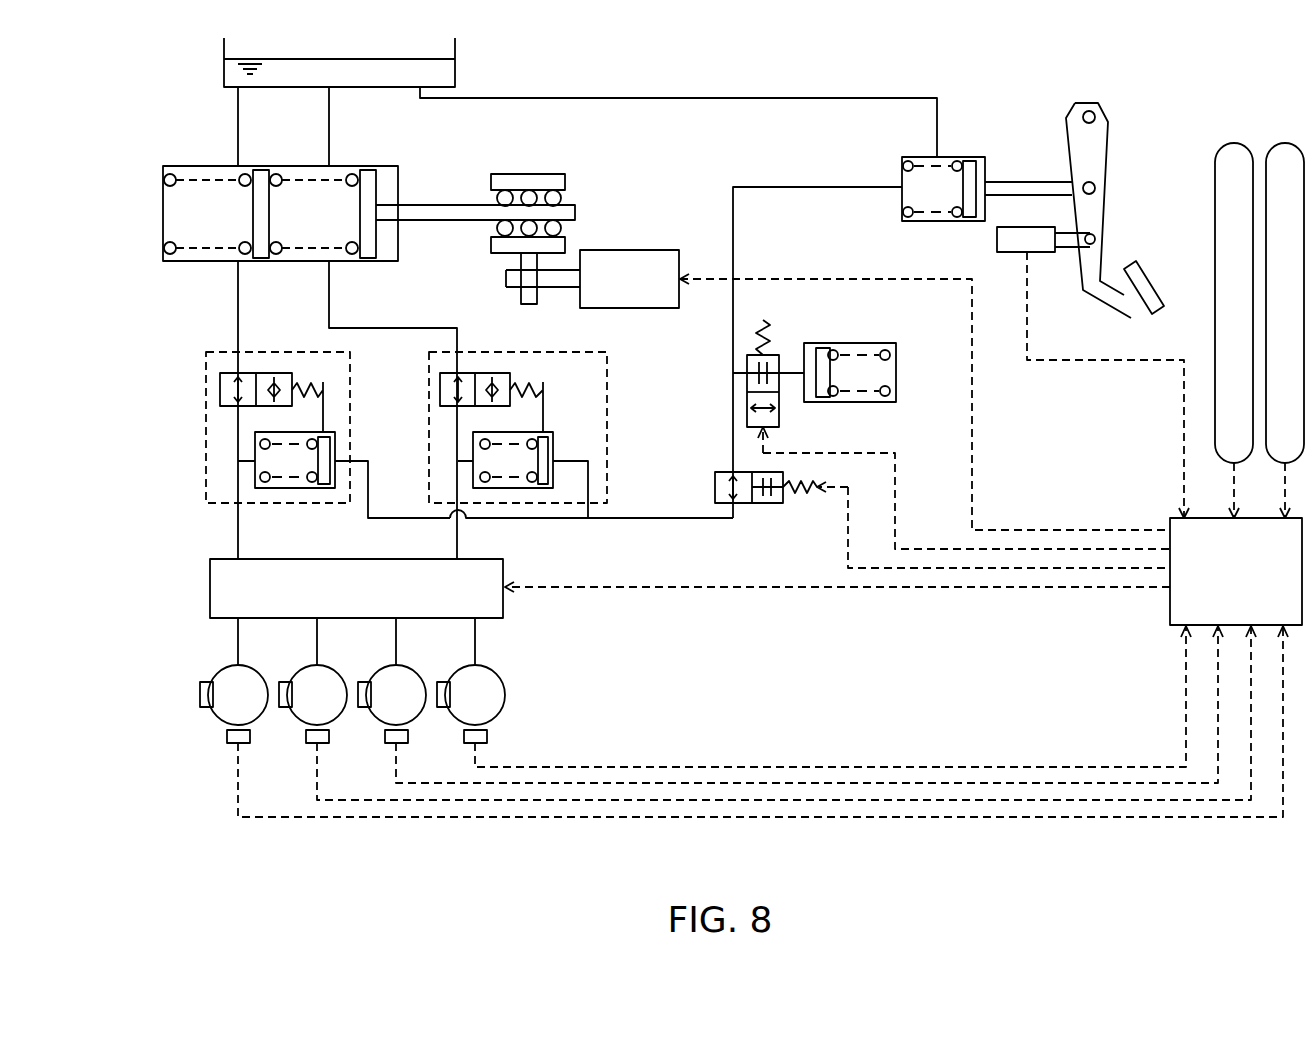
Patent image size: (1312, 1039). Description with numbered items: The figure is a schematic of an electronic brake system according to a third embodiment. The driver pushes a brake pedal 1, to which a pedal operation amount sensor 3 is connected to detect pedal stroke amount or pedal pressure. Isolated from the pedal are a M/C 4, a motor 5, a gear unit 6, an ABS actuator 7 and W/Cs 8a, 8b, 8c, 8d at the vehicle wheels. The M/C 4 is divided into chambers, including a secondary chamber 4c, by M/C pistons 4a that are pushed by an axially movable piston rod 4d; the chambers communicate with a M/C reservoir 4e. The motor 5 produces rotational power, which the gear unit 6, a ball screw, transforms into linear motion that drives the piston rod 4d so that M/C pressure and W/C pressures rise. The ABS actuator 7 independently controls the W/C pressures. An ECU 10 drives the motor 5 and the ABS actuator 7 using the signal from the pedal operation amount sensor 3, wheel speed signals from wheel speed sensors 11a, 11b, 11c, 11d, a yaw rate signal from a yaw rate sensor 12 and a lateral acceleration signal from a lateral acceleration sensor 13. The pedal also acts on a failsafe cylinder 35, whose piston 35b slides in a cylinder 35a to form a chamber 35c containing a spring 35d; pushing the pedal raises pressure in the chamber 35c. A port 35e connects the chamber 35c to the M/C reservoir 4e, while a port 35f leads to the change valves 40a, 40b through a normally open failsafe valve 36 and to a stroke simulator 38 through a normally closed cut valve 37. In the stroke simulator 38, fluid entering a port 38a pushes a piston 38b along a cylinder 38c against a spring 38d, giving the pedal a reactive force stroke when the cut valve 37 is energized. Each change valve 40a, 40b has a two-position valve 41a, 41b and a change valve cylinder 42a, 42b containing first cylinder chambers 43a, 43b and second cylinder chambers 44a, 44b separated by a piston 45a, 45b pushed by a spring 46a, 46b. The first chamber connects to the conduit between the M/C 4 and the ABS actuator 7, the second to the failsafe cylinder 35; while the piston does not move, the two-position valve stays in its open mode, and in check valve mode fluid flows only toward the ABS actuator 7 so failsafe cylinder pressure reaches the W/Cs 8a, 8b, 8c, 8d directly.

The brake pedal 1 is at (1145, 281).
The pedal operation amount sensor 3 is at (1022, 252).
The M/C 4 is at (362, 326).
The M/C pistons 4a is at (262, 168).
The secondary chamber 4c is at (318, 228).
The piston rod 4d is at (203, 228).
The M/C reservoir 4e is at (368, 58).
The motor 5 is at (650, 250).
The gear unit 6 is at (566, 178).
The ABS actuator 7 is at (503, 612).
The W/C 8a is at (205, 682).
The W/C 8b is at (285, 682).
The W/C 8c is at (364, 682).
The W/C 8d is at (443, 682).
The ECU 10 is at (1170, 612).
The wheel speed sensor 11a is at (227, 738).
The wheel speed sensor 11b is at (306, 738).
The wheel speed sensor 11c is at (385, 738).
The wheel speed sensor 11d is at (464, 738).
The yaw rate sensor 12 is at (1234, 143).
The lateral acceleration sensor 13 is at (1285, 143).
The failsafe cylinder 35 is at (902, 281).
The cylinder 35a is at (918, 157).
The piston 35b is at (968, 160).
The chamber 35c is at (935, 200).
The spring 35d is at (902, 166).
The port 35e is at (940, 157).
The port 35f is at (902, 204).
The failsafe valve 36 is at (715, 487).
The cut valve 37 is at (776, 354).
The stroke simulator 38 is at (843, 370).
The port 38a is at (803, 375).
The piston 38b is at (833, 350).
The cylinder 38c is at (869, 343).
The spring 38d is at (886, 396).
The change valve 40a is at (547, 448).
The change valve 40b is at (289, 448).
The two-position valve 41a is at (440, 388).
The two-position valve 41b is at (220, 392).
The change valve cylinder 42a is at (550, 464).
The change valve cylinder 42b is at (294, 475).
The first cylinder chamber 43a is at (494, 470).
The first cylinder chamber 43b is at (275, 470).
The second cylinder chamber 44a is at (552, 470).
The second cylinder chamber 44b is at (333, 470).
The piston 45a is at (541, 481).
The piston 45b is at (320, 480).
The spring 46a is at (482, 444).
The spring 46b is at (262, 444).